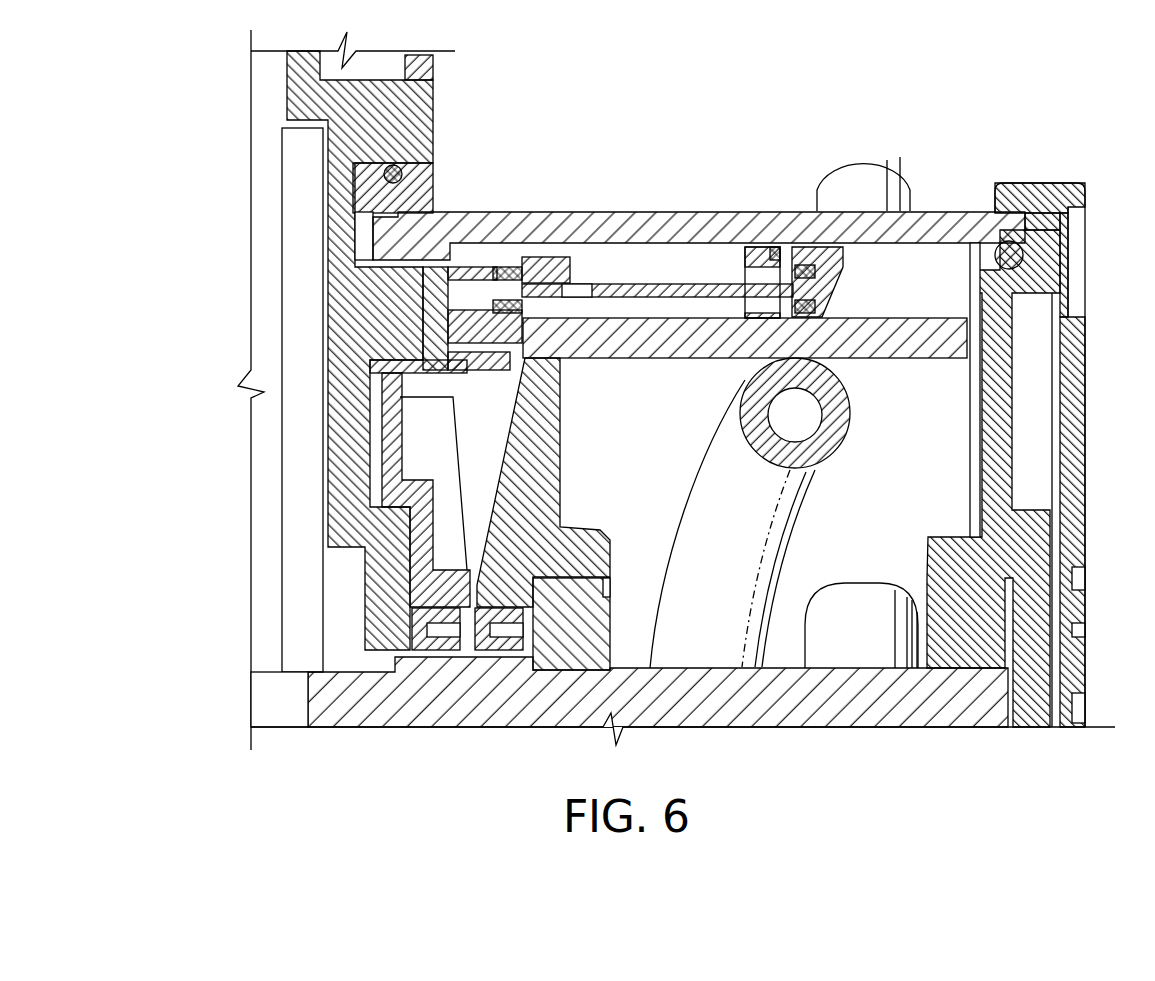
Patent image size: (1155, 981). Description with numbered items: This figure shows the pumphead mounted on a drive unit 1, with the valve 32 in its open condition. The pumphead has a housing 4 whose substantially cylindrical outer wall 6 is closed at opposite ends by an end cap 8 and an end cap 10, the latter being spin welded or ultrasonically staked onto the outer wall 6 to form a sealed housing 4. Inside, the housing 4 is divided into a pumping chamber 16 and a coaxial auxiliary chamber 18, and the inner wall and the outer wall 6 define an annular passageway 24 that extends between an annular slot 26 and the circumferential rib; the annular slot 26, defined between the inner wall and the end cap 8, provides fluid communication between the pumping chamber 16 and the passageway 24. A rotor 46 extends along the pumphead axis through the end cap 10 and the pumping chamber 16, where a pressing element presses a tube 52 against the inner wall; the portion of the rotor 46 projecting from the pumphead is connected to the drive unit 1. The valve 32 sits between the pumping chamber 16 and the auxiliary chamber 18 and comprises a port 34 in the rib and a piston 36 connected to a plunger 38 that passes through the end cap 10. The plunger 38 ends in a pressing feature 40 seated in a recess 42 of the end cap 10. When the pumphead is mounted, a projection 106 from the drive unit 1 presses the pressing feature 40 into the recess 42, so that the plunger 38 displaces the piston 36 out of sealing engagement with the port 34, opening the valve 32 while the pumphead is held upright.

The drive unit 1 is at (206, 103).
The housing 4 is at (487, 224).
The outer wall 6 is at (960, 216).
The end cap 8 is at (1085, 497).
The end cap 10 is at (400, 483).
The pumping chamber 16 is at (646, 449).
The auxiliary chamber 18 is at (492, 449).
The annular passageway 24 is at (905, 287).
The annular slot 26 is at (977, 347).
The valve 32 is at (773, 252).
The port 34 is at (760, 267).
The piston 36 is at (910, 190).
The plunger 38 is at (607, 286).
The pressing feature 40 is at (393, 332).
The recess 42 is at (400, 372).
The rotor 46 is at (915, 705).
The tube 52 is at (697, 652).
The projection 106 is at (350, 315).